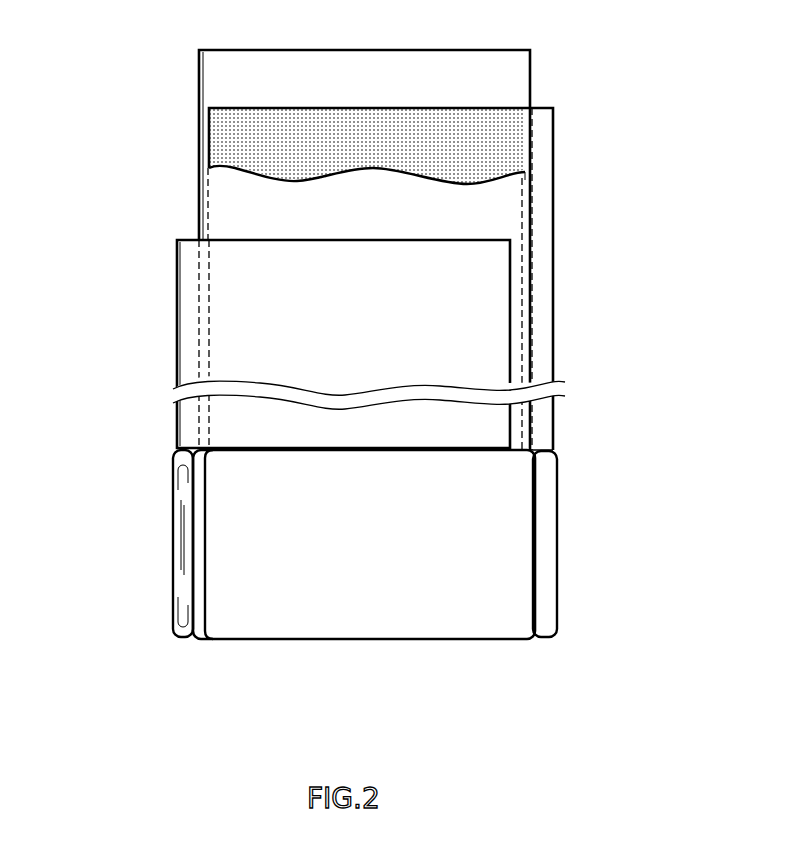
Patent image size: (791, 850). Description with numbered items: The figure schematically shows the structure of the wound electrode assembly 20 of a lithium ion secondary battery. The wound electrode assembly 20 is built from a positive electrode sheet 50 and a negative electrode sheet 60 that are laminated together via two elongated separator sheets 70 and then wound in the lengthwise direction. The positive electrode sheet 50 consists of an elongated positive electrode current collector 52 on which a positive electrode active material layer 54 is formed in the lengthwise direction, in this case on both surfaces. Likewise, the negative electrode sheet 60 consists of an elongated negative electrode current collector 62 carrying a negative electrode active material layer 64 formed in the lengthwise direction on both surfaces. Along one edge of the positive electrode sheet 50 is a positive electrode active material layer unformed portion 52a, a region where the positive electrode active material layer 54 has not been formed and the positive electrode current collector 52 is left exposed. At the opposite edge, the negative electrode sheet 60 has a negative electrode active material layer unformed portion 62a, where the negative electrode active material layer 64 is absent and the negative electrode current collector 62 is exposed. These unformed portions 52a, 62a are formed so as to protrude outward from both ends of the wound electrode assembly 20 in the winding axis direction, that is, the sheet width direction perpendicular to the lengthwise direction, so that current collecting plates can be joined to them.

The wound electrode assembly 20 is at (425, 617).
The positive electrode sheet 50 is at (176, 310).
The positive electrode current collector 52 is at (177, 378).
The positive electrode active material layer unformed portion 52a is at (193, 345).
The positive electrode active material layer 54 is at (237, 256).
The negative electrode sheet 60 is at (556, 184).
The negative electrode current collector 62 is at (553, 284).
The negative electrode active material layer unformed portion 62a is at (538, 254).
The negative electrode active material layer 64 is at (517, 132).
The separator sheet 70 is at (220, 72).